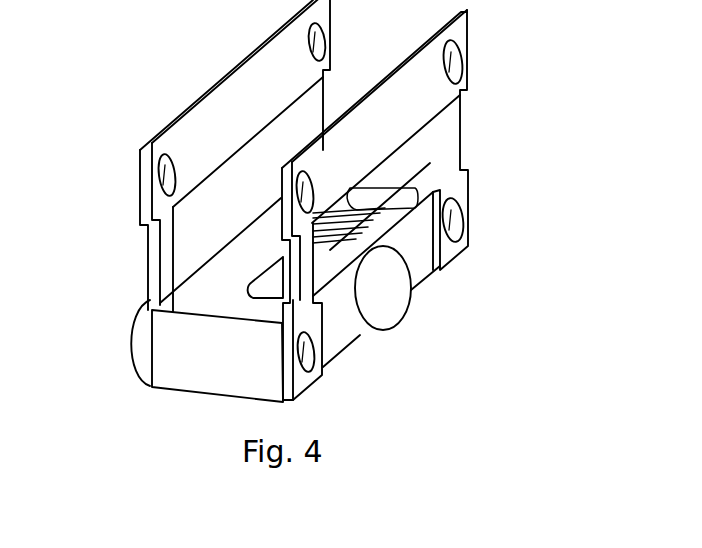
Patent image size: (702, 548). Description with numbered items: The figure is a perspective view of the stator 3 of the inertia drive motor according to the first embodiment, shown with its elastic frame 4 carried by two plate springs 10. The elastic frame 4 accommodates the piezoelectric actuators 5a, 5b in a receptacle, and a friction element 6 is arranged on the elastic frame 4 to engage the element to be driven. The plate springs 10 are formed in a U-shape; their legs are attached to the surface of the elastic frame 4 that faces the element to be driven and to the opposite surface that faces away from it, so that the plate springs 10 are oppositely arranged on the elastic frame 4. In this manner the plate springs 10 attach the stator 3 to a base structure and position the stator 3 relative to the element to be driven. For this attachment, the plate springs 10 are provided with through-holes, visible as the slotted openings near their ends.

The stator 3 is at (563, 265).
The elastic frame 4 is at (212, 358).
The first piezoelectric actuator 5a is at (392, 208).
The rod / cylindrical member 5b is at (313, 294).
The friction element 6 is at (390, 287).
The plate springs 10 is at (236, 120).